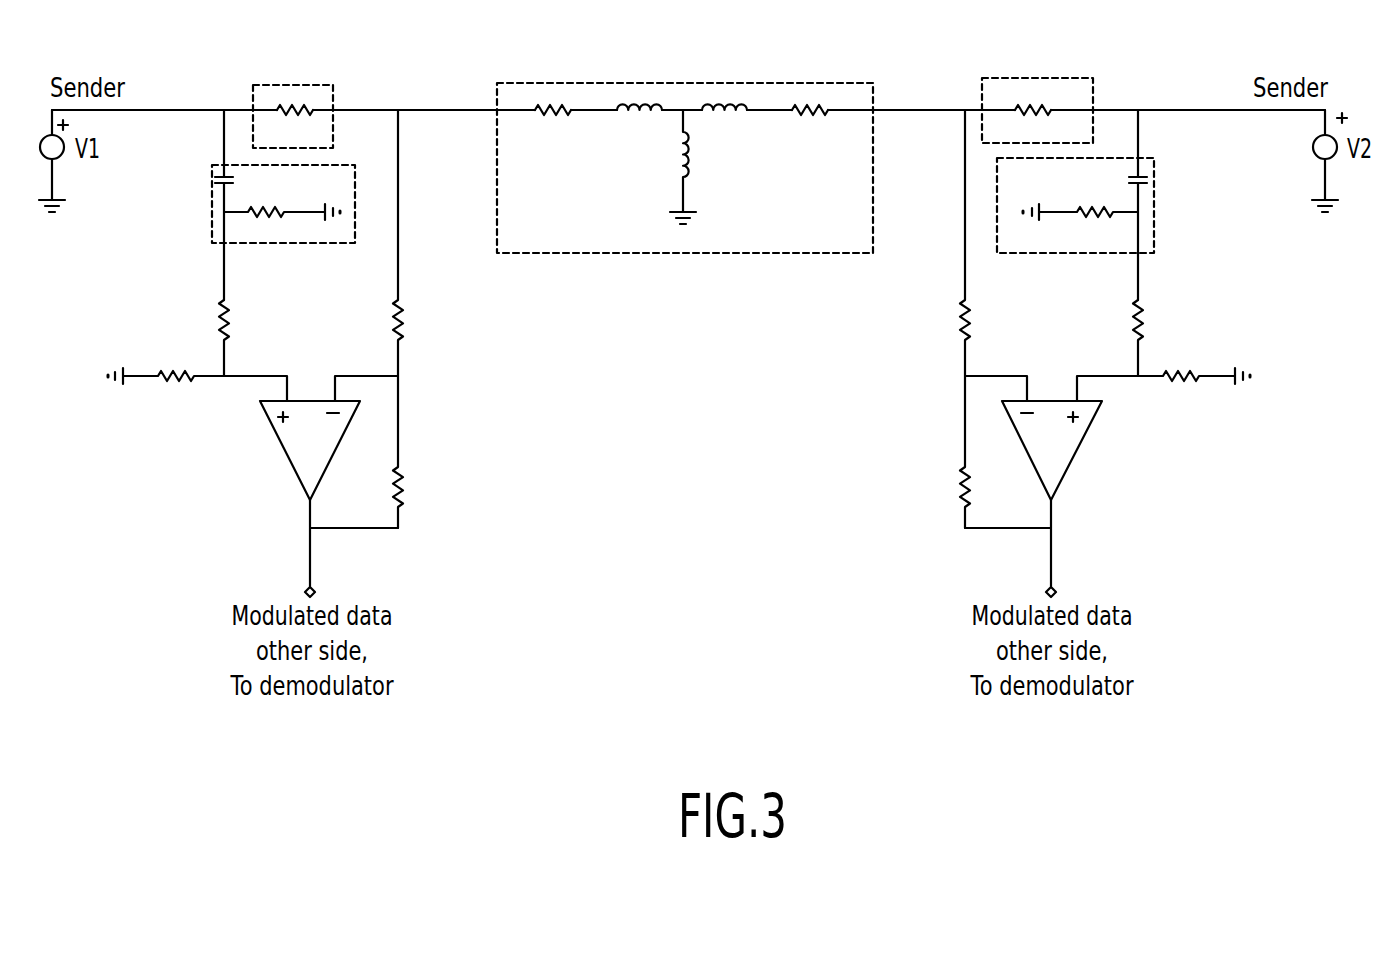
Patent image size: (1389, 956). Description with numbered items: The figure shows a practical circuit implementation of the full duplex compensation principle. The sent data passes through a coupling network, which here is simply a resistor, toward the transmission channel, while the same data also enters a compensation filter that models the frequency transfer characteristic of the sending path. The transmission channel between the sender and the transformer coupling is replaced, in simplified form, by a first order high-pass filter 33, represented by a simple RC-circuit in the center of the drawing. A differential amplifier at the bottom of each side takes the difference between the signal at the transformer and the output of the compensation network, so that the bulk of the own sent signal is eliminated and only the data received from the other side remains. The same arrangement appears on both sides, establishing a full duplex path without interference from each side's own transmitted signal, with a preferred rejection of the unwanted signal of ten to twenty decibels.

The first order high-pass filter 33 is at (637, 247).